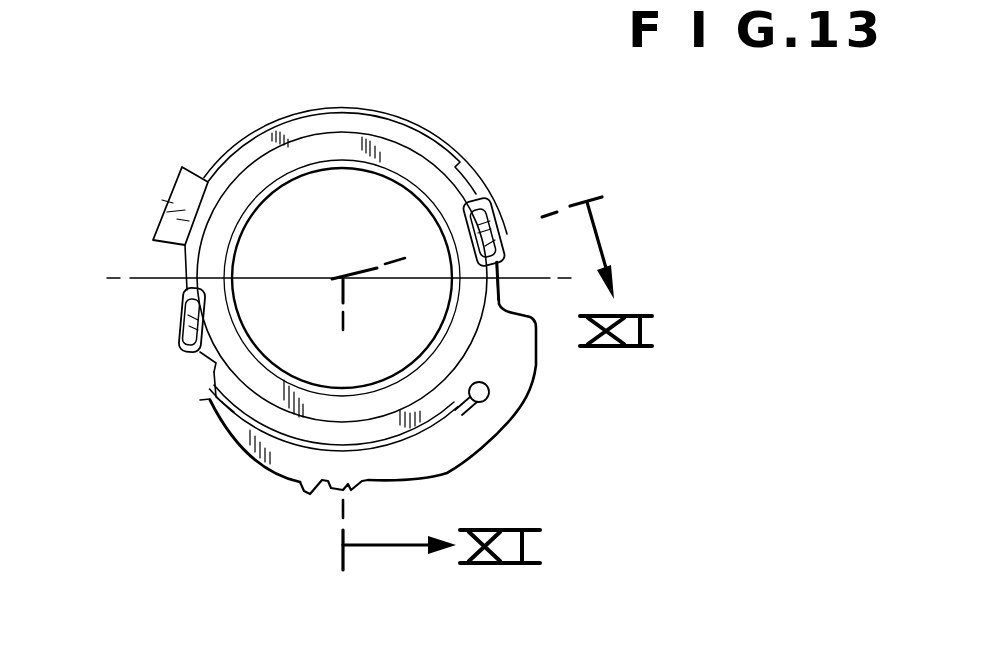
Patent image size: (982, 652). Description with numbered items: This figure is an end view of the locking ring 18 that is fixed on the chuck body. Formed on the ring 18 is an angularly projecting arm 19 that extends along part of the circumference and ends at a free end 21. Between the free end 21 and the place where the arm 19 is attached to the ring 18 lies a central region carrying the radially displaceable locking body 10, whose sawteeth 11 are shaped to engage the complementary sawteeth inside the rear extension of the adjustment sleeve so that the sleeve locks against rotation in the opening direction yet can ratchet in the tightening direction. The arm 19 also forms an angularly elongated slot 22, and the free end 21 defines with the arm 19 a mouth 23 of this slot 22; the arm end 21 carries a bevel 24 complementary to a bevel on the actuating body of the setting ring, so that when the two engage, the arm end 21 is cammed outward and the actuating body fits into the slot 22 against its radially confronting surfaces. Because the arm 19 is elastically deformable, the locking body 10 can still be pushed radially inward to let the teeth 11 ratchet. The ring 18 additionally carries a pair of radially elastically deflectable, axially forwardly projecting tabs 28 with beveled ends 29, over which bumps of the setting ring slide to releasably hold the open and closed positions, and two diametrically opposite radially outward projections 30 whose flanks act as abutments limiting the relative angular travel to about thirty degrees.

The locking body 10 is at (257, 464).
The sawteeth 11 is at (320, 483).
The ring 18 is at (434, 126).
The arm 19 is at (460, 428).
The free end 21 is at (198, 401).
The slot 22 is at (406, 440).
The mouth 23 is at (200, 387).
The bevel 24 is at (218, 400).
The tab 28 is at (490, 215).
The beveled end 29 is at (181, 300).
The radially outward projection 30 is at (162, 198).